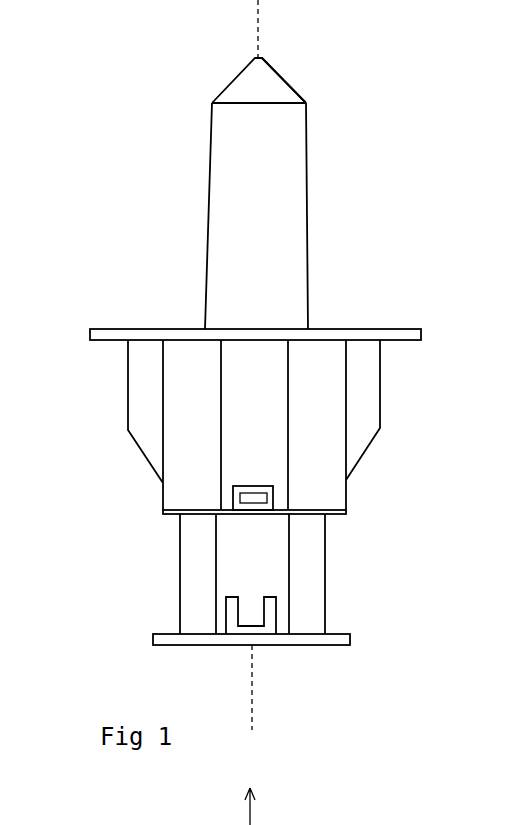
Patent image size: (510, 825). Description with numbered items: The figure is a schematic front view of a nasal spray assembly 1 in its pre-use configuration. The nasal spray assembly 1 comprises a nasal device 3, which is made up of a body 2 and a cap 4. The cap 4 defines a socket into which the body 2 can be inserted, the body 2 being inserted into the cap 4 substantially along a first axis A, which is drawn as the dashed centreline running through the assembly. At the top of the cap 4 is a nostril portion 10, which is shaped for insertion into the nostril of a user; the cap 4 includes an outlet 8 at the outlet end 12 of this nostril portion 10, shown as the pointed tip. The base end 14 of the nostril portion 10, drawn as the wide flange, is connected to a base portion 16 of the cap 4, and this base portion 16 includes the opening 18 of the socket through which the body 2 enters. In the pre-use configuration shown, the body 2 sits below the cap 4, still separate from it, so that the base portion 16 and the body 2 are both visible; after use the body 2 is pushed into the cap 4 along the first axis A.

The nasal spray assembly 1 is at (159, 71).
The body 2 is at (216, 580).
The nasal device 3 is at (99, 186).
The cap 4 is at (318, 181).
The outlet 8 is at (262, 60).
The nostril portion 10 is at (287, 178).
The outlet end 12 is at (288, 81).
The base end 14 is at (318, 320).
The base portion 16 is at (240, 430).
The opening 18 is at (334, 515).
The first axis A is at (254, 700).